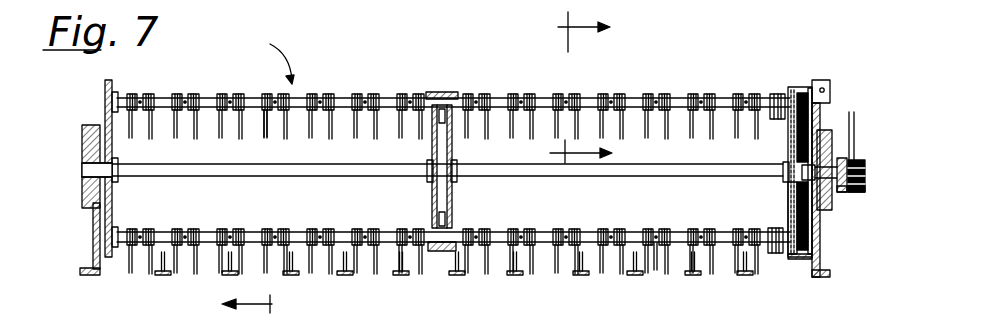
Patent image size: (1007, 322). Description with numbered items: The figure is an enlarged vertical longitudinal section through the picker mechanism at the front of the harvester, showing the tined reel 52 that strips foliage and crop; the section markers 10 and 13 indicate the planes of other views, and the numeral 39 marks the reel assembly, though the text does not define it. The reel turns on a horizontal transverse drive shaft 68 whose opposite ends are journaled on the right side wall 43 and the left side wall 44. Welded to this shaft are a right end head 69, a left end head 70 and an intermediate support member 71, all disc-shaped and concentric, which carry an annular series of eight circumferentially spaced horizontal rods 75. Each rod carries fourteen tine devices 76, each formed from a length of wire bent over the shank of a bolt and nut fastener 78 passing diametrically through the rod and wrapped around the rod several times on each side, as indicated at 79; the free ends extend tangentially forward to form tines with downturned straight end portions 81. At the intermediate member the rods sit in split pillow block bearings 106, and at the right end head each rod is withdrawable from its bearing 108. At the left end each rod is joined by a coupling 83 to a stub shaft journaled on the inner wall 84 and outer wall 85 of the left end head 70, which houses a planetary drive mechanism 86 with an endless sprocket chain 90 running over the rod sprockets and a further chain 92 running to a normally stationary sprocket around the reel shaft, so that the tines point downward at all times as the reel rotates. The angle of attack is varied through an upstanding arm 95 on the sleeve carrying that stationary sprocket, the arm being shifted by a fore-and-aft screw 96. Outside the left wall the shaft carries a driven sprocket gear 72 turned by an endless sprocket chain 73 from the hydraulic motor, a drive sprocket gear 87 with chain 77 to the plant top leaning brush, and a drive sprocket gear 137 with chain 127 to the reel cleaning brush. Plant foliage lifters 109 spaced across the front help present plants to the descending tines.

The section line 10 is at (234, 305).
The section line 13 is at (593, 88).
The tine assembly 39 is at (270, 59).
The side wall 43 is at (92, 268).
The left side wall 44 is at (822, 262).
The tined reel 52 is at (104, 81).
The drive shaft 68 is at (292, 174).
The right end head 69 is at (114, 87).
The left end head 70 is at (793, 85).
The intermediate support member 71 is at (444, 90).
The driven sprocket gear 72 is at (852, 192).
The endless sprocket chain 73 is at (856, 119).
The rods or tubes 75 is at (342, 97).
The tine devices 76 is at (190, 96).
The sprocket chain 77 is at (841, 193).
The bolt and nut fastener 78 is at (654, 97).
The wire wrap 79 is at (532, 94).
The downturned straight end portion 81 is at (664, 270).
The coupling 83 is at (766, 92).
The inner wall 84 is at (783, 257).
The outer wall 85 is at (810, 259).
The planetary drive mechanism 86 is at (804, 90).
The drive sprocket gear 87 is at (845, 160).
The endless sprocket chain 90 is at (790, 211).
The endless sprocket chain 92 is at (813, 119).
The upstanding arm 95 is at (815, 110).
The screw 96 is at (828, 89).
The split pillow block bearings 106 is at (431, 92).
The bearing 108 is at (114, 113).
The plant foliage lifters 109 is at (516, 276).
The sprocket chain 127 is at (863, 167).
The drive sprocket gear 137 is at (859, 190).